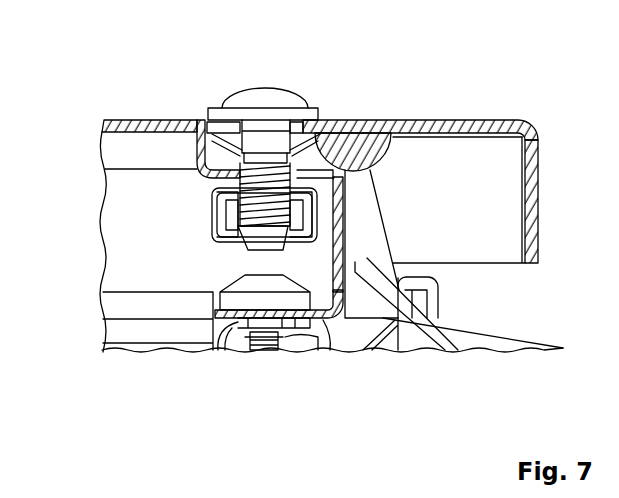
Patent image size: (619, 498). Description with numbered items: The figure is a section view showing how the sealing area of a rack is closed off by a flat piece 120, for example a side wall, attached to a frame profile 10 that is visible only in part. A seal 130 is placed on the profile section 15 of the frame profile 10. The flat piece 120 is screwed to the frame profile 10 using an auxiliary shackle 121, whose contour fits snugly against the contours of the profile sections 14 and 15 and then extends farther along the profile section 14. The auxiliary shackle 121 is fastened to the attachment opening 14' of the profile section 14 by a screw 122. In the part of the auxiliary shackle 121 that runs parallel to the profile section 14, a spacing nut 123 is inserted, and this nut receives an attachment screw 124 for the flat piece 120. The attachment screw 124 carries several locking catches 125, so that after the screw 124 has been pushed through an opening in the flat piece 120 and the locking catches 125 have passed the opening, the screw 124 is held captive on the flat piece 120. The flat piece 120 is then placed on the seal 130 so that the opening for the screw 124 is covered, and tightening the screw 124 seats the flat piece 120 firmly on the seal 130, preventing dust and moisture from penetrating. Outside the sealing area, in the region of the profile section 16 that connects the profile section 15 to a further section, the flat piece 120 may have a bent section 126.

The frame profile 10 is at (489, 380).
The profile section 14 is at (270, 265).
The attachment opening 14' is at (274, 364).
The profile section 15 is at (355, 204).
The profile section 16 is at (413, 322).
The flat piece 120 is at (477, 126).
The auxiliary shackle 121 is at (336, 242).
The screw 122 is at (243, 300).
The spacing nut 123 is at (213, 200).
The attachment screw 124 is at (262, 95).
The locking catches 125 is at (216, 112).
The bent section 126 is at (532, 200).
The seal 130 is at (349, 138).